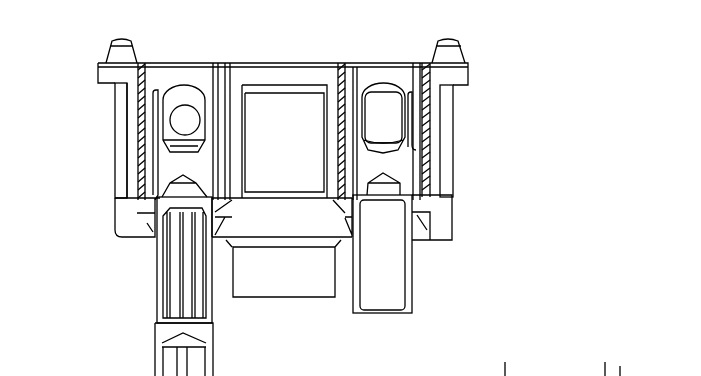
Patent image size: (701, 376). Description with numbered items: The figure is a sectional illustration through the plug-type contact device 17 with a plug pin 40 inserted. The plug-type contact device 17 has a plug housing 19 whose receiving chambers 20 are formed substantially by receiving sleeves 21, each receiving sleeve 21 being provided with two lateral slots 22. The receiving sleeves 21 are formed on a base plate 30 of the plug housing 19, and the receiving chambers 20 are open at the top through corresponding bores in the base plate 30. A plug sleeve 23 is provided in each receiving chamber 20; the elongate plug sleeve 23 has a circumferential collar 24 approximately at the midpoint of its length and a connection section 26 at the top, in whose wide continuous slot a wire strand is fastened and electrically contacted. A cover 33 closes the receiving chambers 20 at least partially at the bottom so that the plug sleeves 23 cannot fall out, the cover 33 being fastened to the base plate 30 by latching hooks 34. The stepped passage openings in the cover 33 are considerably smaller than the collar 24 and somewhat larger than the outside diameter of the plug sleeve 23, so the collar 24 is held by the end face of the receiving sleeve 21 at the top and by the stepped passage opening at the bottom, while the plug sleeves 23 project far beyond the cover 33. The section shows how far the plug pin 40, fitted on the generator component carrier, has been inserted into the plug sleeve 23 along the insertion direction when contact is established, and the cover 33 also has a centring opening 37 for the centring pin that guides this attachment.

The plug-type contact device 17 is at (592, 106).
The plug housing 19 is at (479, 173).
The receiving chamber 20 is at (187, 80).
The receiving sleeve 21 is at (127, 106).
The lateral slot 22 is at (143, 128).
The plug sleeve 23 is at (155, 263).
The collar 24 is at (150, 205).
The connection section 26 is at (163, 150).
The base plate 30 is at (470, 77).
The cover 33 is at (448, 240).
The latching hook 34 is at (457, 53).
The centring opening 37 is at (273, 297).
The plug pin 40 is at (163, 317).